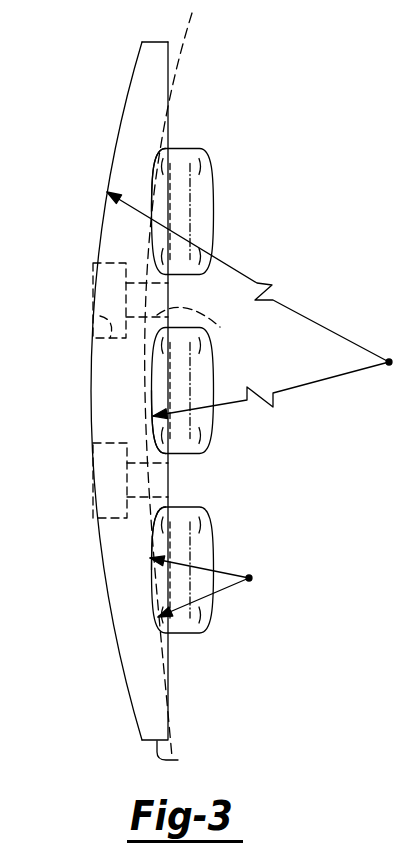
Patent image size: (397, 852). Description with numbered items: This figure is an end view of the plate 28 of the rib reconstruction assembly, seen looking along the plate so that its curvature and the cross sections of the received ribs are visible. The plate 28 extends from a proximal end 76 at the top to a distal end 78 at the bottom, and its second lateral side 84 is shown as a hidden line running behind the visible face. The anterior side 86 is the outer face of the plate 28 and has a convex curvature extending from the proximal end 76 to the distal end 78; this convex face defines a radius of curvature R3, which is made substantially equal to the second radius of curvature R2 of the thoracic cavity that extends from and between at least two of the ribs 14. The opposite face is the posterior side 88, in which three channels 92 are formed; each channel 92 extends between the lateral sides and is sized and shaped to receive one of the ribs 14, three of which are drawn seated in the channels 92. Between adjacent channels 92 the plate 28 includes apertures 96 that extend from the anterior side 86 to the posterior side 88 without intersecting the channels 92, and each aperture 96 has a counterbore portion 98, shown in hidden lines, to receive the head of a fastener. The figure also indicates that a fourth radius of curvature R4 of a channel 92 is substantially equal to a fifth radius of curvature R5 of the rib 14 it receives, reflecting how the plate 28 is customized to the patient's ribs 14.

The plate 28 is at (150, 391).
The proximal end 76 is at (142, 42).
The distal end 78 is at (212, 753).
The second lateral side 84 is at (215, 692).
The anterior side 86 is at (117, 642).
The posterior side 88 is at (168, 112).
The ribs 14 is at (205, 185).
The channel 92 is at (152, 198).
The aperture 96 is at (232, 332).
The counterbore portion 98 is at (93, 315).
The second radius of curvature R2 is at (333, 380).
The radius of curvature R3 is at (310, 313).
The fourth radius of curvature R4 is at (225, 572).
The fifth radius of curvature R5 is at (198, 602).